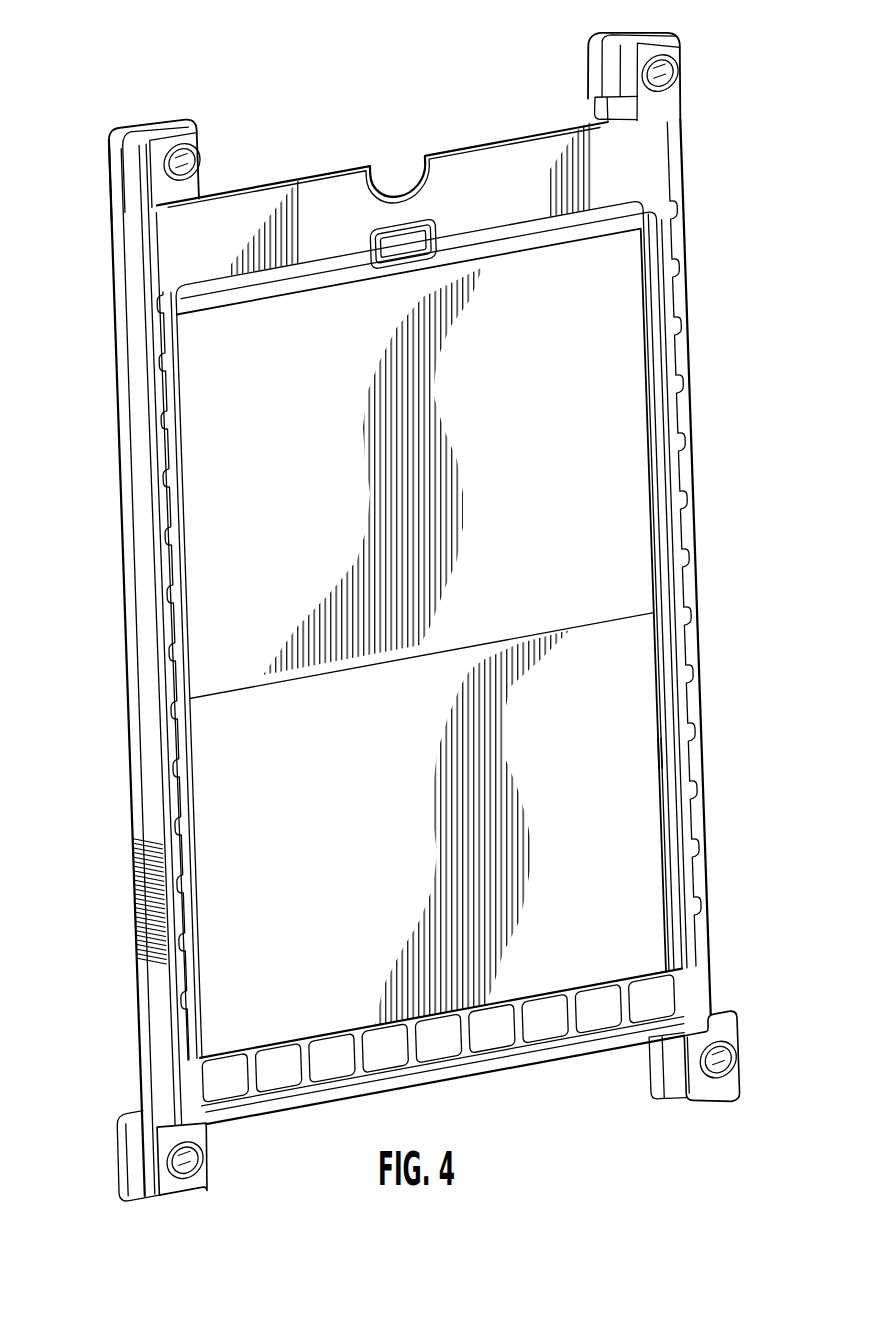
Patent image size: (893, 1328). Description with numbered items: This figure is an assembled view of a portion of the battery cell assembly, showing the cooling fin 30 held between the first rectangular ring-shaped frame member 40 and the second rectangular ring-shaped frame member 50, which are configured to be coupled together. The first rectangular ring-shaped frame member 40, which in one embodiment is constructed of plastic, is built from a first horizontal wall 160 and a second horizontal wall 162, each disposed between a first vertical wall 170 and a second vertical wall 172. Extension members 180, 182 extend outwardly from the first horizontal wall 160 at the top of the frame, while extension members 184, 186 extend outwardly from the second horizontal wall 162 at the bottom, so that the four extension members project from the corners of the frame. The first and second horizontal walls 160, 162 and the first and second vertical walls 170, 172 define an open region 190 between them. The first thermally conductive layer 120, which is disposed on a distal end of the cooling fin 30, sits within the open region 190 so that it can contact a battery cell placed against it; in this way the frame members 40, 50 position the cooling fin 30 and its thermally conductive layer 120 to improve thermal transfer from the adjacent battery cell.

The cooling fin 30 is at (620, 863).
The first rectangular ring-shaped frame member 40 is at (166, 1193).
The second rectangular ring-shaped frame member 50 is at (120, 1177).
The first thermally conductive layer 120 is at (620, 450).
The first horizontal wall 160 is at (327, 187).
The second horizontal wall 162 is at (536, 1037).
The first vertical wall 170 is at (180, 928).
The second vertical wall 172 is at (683, 923).
The extension member 180 is at (197, 140).
The extension member 182 is at (680, 50).
The extension member 184 is at (171, 1194).
The extension member 186 is at (696, 1094).
The open region 190 is at (655, 767).